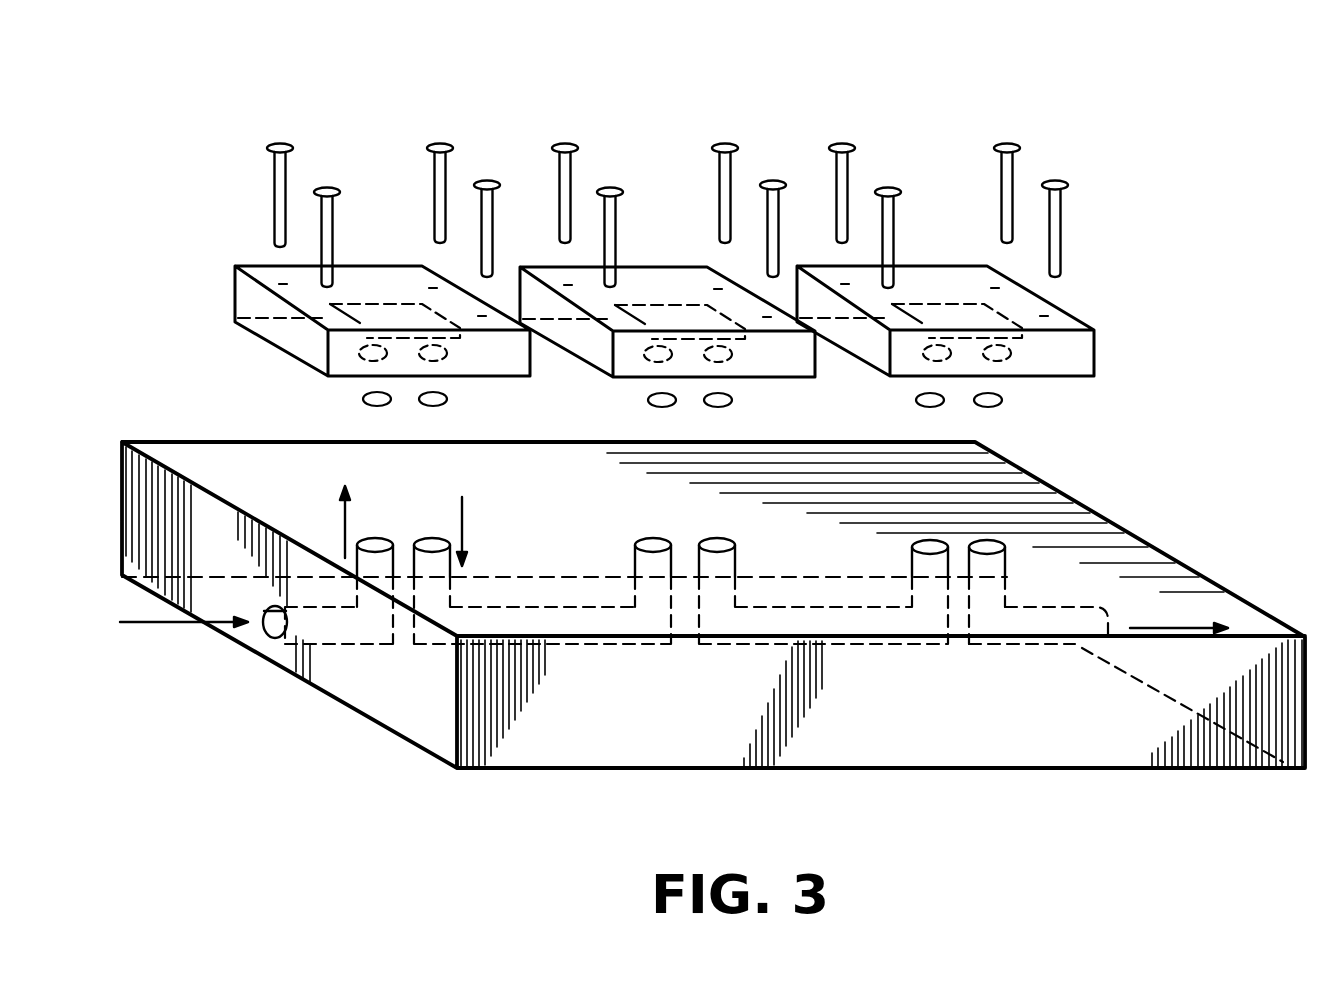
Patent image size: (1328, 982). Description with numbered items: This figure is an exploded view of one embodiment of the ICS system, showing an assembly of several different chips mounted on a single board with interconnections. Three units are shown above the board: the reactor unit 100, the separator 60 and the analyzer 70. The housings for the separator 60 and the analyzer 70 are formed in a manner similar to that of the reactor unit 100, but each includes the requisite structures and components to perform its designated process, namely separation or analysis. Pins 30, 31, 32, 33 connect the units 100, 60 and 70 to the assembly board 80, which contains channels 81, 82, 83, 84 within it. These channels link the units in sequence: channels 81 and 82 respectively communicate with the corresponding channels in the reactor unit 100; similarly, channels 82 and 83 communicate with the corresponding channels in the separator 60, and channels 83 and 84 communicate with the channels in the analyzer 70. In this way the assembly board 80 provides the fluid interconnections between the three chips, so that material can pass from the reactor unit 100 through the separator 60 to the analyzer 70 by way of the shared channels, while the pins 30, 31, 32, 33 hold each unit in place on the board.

The pin 30 is at (283, 144).
The pin 31 is at (318, 192).
The pin 32 is at (434, 150).
The pin 33 is at (487, 180).
The separator 60 is at (597, 370).
The analyzer 70 is at (1075, 379).
The assembly board 80 is at (378, 724).
The channel 81 is at (277, 636).
The channel 82 is at (597, 647).
The channel 83 is at (893, 647).
The channel 84 is at (1063, 648).
The reactor unit 100 is at (237, 290).